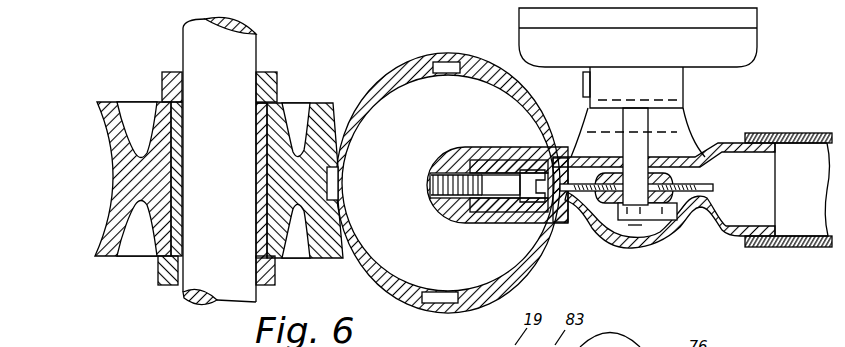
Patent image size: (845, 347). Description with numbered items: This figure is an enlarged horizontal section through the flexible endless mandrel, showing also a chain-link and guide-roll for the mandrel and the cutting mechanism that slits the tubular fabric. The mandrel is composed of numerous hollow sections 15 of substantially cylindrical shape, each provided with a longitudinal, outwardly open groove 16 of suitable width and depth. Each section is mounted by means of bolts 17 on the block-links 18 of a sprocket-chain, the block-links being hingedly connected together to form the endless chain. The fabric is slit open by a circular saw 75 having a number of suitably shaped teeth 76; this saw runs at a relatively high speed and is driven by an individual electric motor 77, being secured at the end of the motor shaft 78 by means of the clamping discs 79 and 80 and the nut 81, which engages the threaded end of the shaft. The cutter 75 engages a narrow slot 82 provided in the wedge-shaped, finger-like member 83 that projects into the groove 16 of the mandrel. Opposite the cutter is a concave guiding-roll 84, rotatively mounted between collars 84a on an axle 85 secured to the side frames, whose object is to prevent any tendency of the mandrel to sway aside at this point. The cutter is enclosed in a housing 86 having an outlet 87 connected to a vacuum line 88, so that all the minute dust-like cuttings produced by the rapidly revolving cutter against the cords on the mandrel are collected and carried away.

The hollow sections 15 is at (377, 80).
The groove 16 is at (561, 212).
The bolts 17 is at (430, 187).
The block-links 18 is at (478, 150).
The circular saw 75 is at (697, 214).
The teeth 76 is at (713, 188).
The electric motor 77 is at (753, 50).
The motor shaft 78 is at (642, 125).
The clamping disc 79 is at (693, 157).
The clamping disc 80 is at (673, 198).
The nut 81 is at (657, 214).
The slot 82 is at (608, 165).
The finger-like member 83 is at (588, 130).
The concave guiding-roll 84 is at (116, 160).
The collars 84a is at (277, 82).
The axle 85 is at (195, 47).
The housing 86 is at (623, 230).
The outlet 87 is at (753, 222).
The vacuum line 88 is at (810, 228).